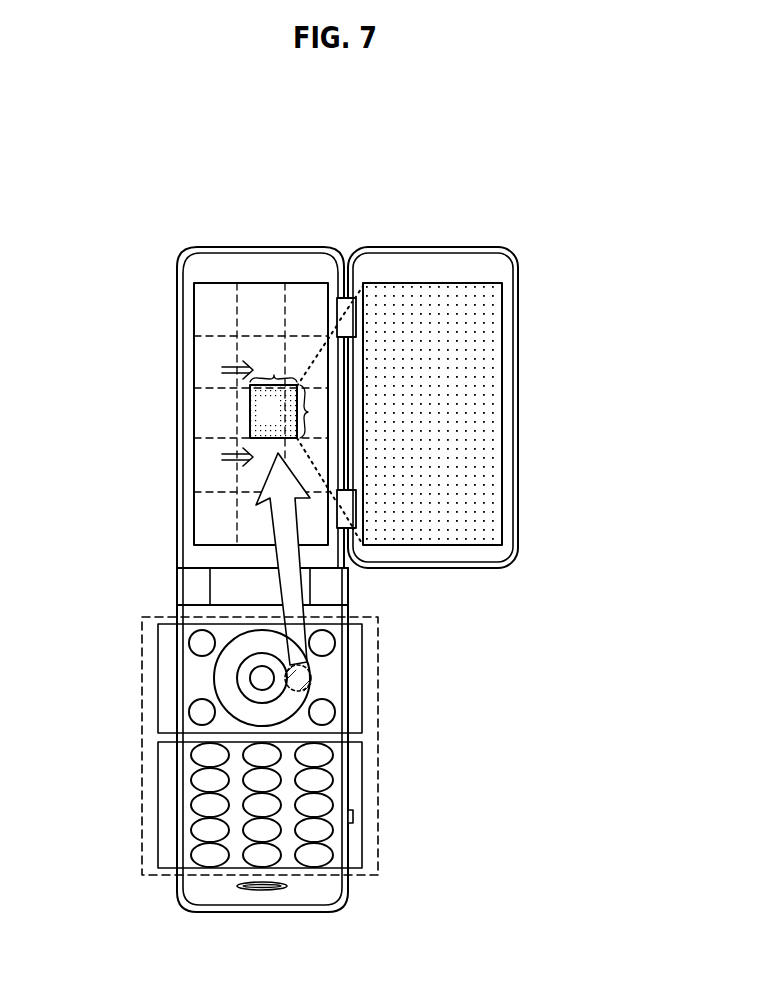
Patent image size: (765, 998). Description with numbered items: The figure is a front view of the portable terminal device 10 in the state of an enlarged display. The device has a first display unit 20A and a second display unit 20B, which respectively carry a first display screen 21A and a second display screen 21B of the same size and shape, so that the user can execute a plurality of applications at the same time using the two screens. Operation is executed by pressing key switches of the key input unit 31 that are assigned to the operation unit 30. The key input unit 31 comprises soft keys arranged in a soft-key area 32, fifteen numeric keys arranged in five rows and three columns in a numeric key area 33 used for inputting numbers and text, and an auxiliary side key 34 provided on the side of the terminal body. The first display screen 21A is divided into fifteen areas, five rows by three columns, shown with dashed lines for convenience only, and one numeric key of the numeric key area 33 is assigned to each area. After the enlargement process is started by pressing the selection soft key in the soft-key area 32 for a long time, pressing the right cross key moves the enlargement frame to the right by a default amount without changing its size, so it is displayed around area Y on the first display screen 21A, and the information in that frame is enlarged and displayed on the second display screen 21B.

The portable terminal device 10 is at (458, 216).
The first display unit 20A is at (177, 313).
The first display screen 21A is at (205, 417).
The second display unit 20B is at (518, 338).
The second display screen 21B is at (488, 495).
The operation unit 30 is at (345, 893).
The key input unit 31 is at (380, 726).
The soft-key area 32 is at (157, 668).
The numeric key area 33 is at (157, 790).
The auxiliary side key 34 is at (354, 817).